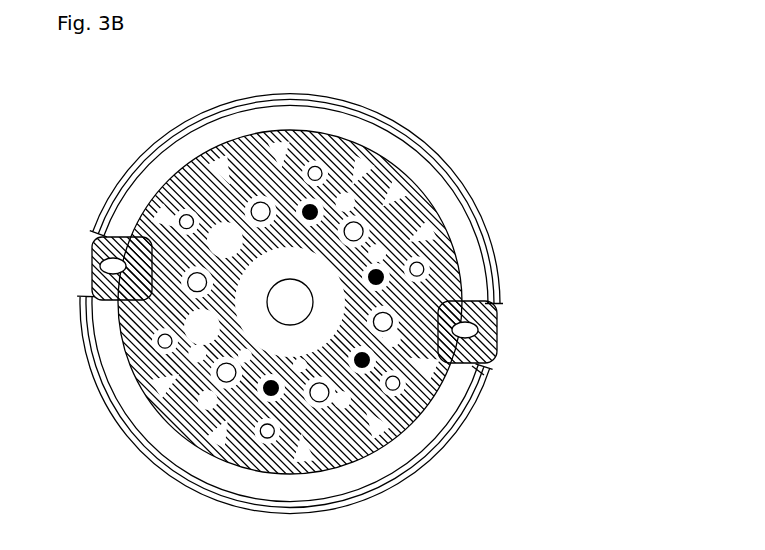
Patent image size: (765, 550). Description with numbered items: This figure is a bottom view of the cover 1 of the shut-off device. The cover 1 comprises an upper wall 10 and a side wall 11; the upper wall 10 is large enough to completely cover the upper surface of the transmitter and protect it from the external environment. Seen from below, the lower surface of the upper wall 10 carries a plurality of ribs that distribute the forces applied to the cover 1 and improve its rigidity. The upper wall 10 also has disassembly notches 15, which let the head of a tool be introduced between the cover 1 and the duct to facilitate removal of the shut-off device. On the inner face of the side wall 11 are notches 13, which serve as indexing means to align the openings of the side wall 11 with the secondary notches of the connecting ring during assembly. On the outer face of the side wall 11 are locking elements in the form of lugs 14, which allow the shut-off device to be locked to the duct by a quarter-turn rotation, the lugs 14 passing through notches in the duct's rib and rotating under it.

The cover 1 is at (382, 275).
The upper wall 10 is at (452, 172).
The side wall 11 is at (397, 432).
The notches 13 is at (128, 300).
The lugs 14 is at (492, 340).
The disassembly notches 15 is at (492, 371).